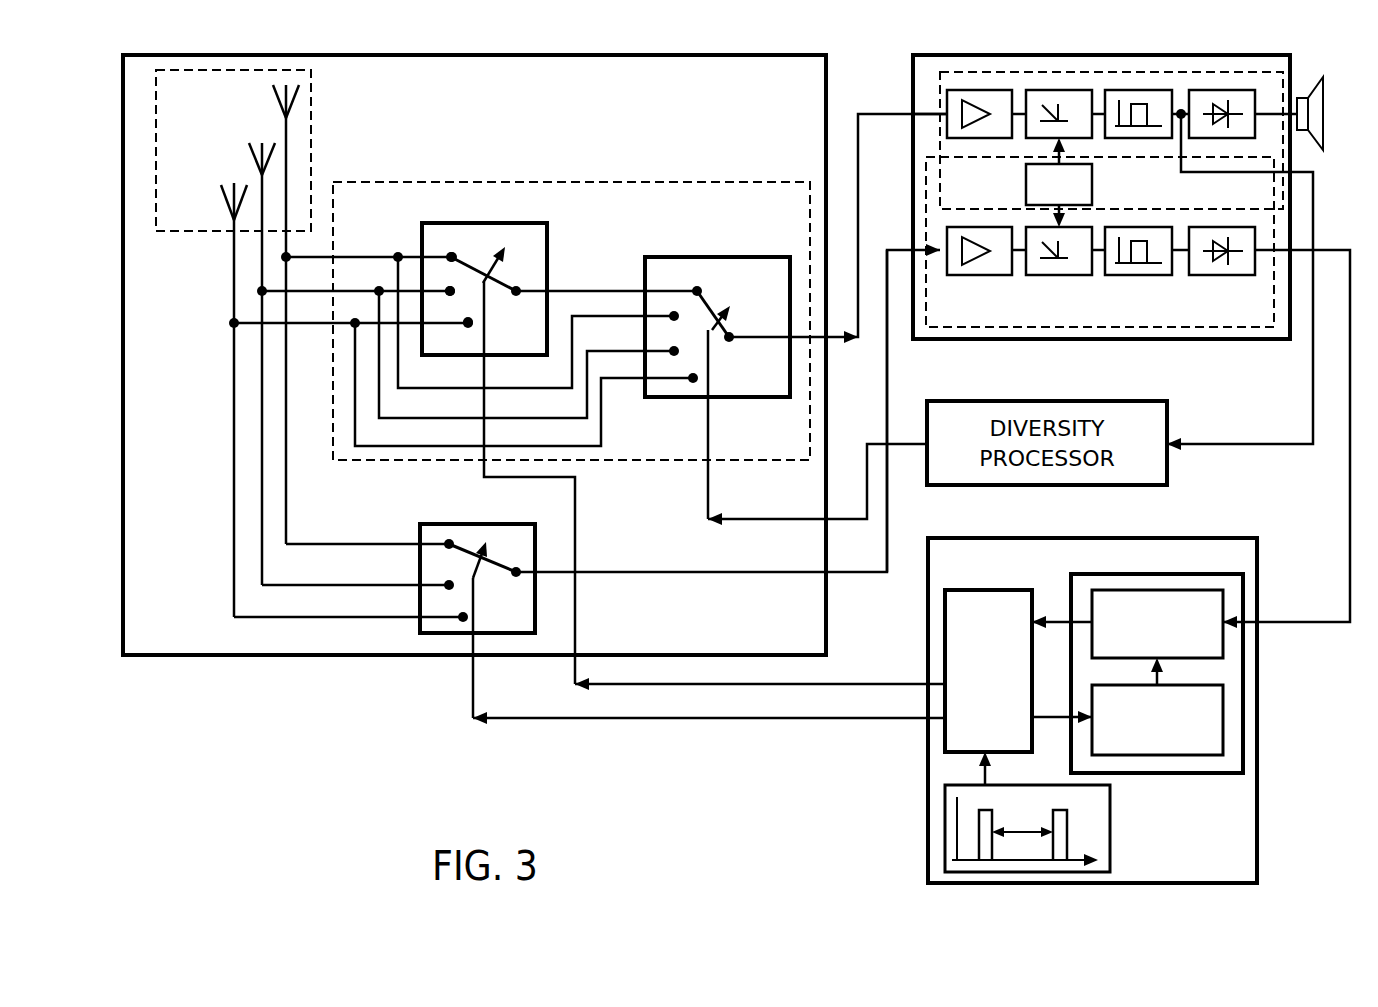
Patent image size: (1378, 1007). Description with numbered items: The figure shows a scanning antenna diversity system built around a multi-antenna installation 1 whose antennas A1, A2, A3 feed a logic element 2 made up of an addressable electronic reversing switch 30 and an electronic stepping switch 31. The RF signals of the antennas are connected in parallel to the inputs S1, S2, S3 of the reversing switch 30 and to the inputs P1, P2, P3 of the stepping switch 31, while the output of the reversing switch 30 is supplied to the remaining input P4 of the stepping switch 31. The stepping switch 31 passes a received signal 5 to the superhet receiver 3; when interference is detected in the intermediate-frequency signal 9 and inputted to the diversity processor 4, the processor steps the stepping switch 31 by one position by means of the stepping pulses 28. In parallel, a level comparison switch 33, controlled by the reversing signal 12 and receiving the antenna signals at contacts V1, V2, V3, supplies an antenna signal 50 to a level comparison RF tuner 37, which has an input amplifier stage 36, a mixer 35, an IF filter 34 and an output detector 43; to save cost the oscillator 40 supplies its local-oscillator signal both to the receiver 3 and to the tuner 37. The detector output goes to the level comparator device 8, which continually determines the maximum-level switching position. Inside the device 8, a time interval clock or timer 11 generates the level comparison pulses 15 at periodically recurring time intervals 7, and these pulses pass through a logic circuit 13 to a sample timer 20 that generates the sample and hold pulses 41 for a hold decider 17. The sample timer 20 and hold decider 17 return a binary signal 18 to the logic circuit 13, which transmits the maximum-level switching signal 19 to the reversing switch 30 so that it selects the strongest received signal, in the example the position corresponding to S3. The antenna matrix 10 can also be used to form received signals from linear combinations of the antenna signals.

The multi-antenna installation 1 is at (761, 97).
The logic element 2 is at (595, 219).
The receiver 3 is at (1290, 88).
The diversity processor 4 is at (1043, 401).
The received signal 5 is at (858, 160).
The time interval 7 is at (1028, 828).
The level comparator device 8 is at (972, 538).
The intermediate-frequency signal 9 is at (1313, 200).
The antenna matrix 10 is at (1165, 574).
The time interval clock or timer 11 is at (1063, 785).
The reversing signal 12 is at (650, 722).
The logic circuit 13 is at (985, 590).
The level comparison pulses 15 is at (1060, 714).
The hold decider 17 is at (1110, 590).
The binary signal 18 is at (1055, 616).
The maximum-level switching signal 19 is at (852, 680).
The sample timer 20 is at (1188, 756).
The stepping signals or pulses 28 is at (775, 522).
The addressable electronic reversing switch 30 is at (508, 343).
The electronic stepping switch 31 is at (756, 287).
The level comparison switch 33 is at (503, 555).
The IF filter 34 is at (1137, 276).
The mixer 35 is at (1060, 276).
The input amplifier stage 36 is at (978, 276).
The level comparison RF tuner 37 is at (1190, 330).
The oscillator 40 is at (1047, 197).
The sample and hold pulses 41 is at (1162, 680).
The output detector 43 is at (1223, 276).
The antenna signal 50 is at (888, 355).
The antenna A1 is at (222, 206).
The antenna A2 is at (250, 158).
The antenna A3 is at (275, 106).
The switching position S1 is at (468, 328).
The switching position S2 is at (452, 285).
The switching position S3 is at (450, 252).
The switching position P1 is at (690, 385).
The switching position P2 is at (670, 353).
The switching position P3 is at (670, 318).
The switching position P4 is at (697, 285).
The contact V1 is at (467, 612).
The contact V2 is at (445, 580).
The contact V3 is at (448, 538).